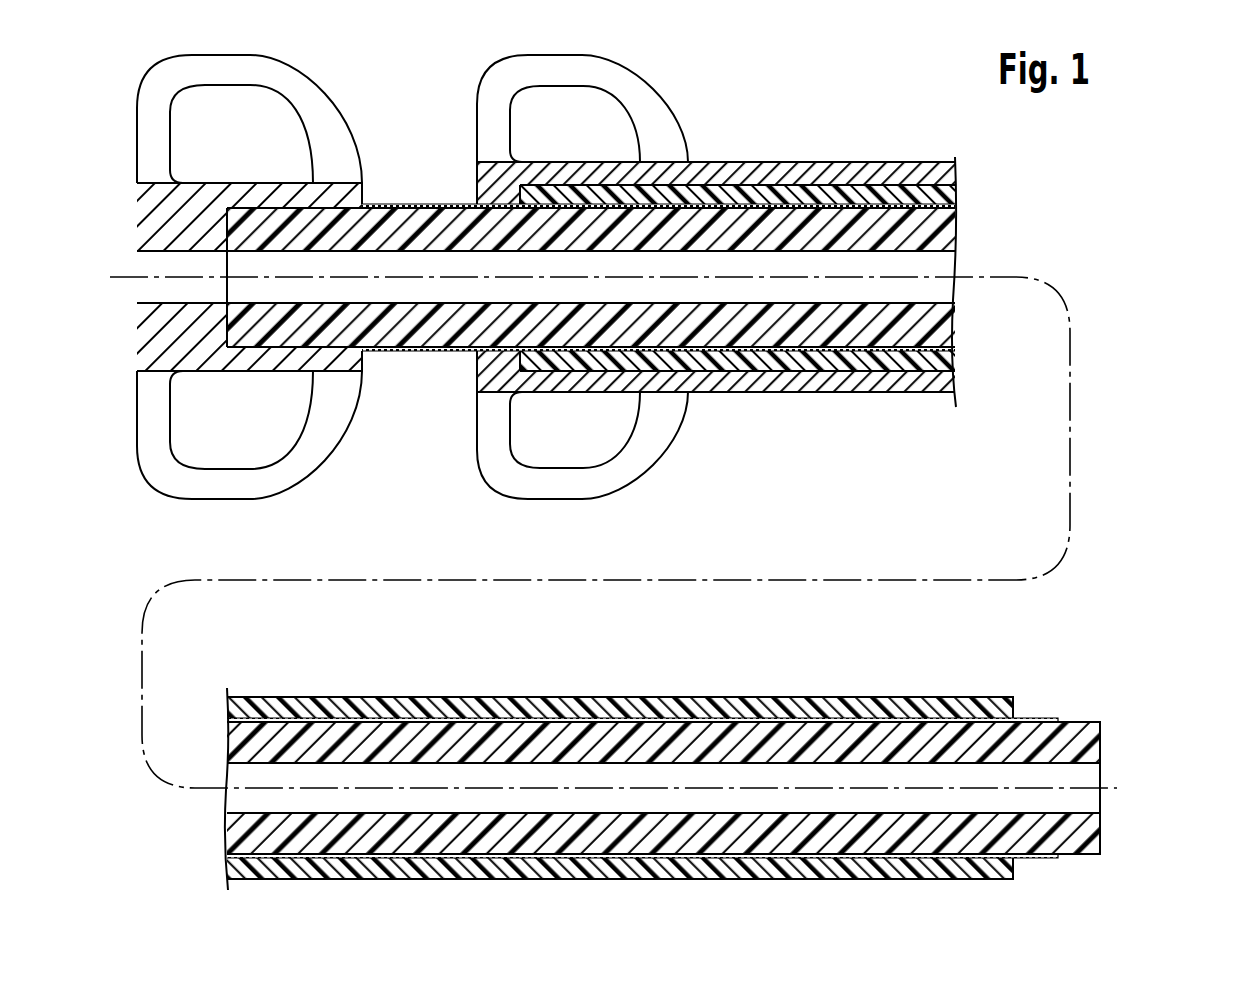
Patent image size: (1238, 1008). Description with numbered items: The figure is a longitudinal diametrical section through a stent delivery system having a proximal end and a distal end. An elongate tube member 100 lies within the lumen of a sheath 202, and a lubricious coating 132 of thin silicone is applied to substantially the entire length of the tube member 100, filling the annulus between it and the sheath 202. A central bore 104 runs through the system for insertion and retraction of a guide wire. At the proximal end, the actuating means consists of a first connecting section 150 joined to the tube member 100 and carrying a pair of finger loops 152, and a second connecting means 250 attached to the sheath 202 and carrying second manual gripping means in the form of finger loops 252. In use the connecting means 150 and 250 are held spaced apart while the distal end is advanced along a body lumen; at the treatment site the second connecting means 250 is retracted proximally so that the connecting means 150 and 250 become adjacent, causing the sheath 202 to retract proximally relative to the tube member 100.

The elongate tube member 100 is at (945, 322).
The central bore 104 is at (940, 263).
The lubricious coating 132 is at (408, 353).
The first connecting section 150 is at (353, 196).
The finger loops 152 is at (303, 470).
The sheath 202 is at (945, 195).
The second connecting means 250 is at (815, 167).
The finger loops 252 is at (640, 470).